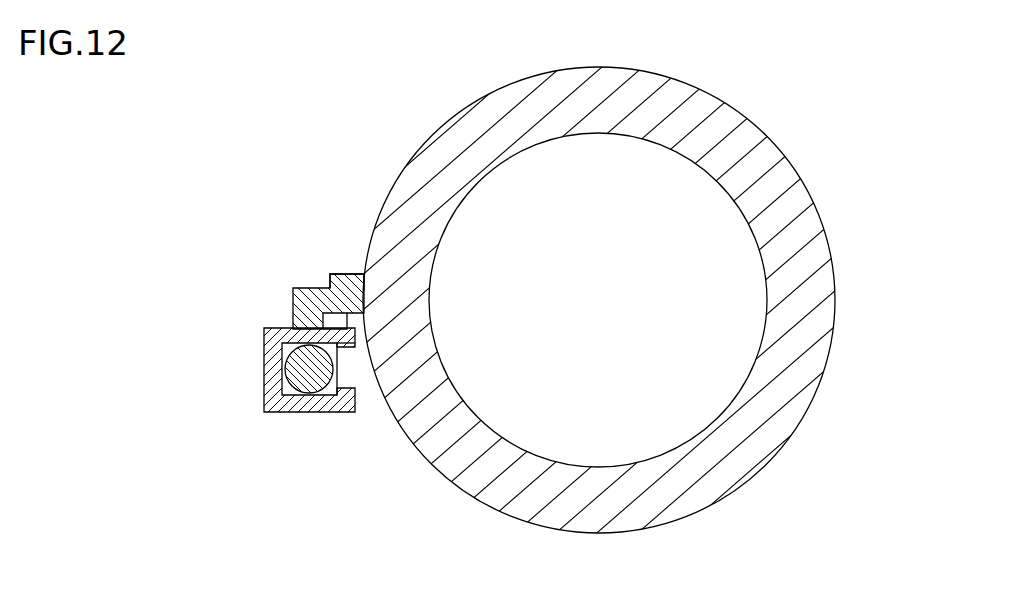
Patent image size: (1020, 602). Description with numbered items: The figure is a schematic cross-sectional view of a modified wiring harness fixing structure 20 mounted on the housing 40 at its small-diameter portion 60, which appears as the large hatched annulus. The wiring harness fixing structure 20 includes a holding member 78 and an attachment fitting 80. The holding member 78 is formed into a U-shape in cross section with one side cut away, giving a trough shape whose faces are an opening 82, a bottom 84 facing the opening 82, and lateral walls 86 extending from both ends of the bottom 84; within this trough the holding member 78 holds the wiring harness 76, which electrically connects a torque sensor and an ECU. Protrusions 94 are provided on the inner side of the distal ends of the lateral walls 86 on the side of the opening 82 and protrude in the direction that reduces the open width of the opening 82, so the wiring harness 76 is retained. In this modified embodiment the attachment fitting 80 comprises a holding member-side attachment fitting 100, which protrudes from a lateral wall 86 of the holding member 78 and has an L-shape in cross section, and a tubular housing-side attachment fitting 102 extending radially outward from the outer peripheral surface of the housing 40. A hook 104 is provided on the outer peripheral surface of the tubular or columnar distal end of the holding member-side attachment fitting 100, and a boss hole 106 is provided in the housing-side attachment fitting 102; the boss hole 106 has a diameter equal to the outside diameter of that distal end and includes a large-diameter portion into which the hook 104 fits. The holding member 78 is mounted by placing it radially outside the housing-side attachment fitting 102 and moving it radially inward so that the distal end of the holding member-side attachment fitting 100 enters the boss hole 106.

The wiring harness fixing structure 20 is at (233, 317).
The housing 40 is at (797, 393).
The small-diameter portion 60 is at (622, 301).
The wiring harness 76 is at (333, 348).
The holding member 78 is at (282, 448).
The attachment fitting 80 is at (297, 226).
The opening 82 is at (350, 365).
The bottom 84 is at (286, 384).
The lateral wall 86 is at (278, 337).
The protrusion 94 is at (340, 350).
The holding member-side attachment fitting 100 is at (297, 252).
The housing-side attachment fitting 102 is at (335, 273).
The hook 104 is at (357, 273).
The boss hole 106 is at (328, 314).